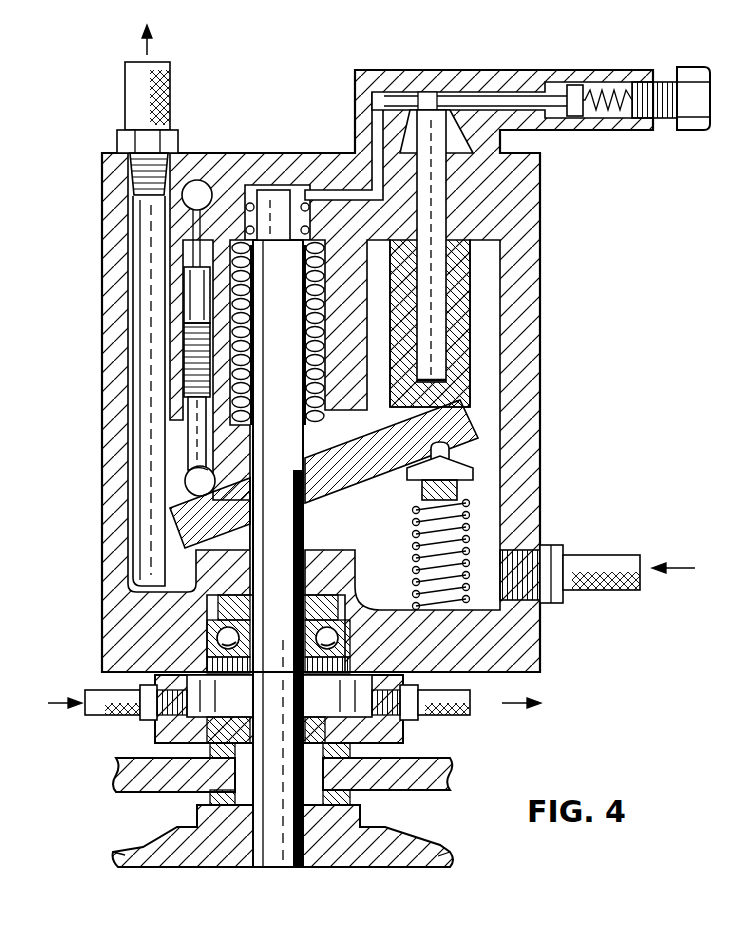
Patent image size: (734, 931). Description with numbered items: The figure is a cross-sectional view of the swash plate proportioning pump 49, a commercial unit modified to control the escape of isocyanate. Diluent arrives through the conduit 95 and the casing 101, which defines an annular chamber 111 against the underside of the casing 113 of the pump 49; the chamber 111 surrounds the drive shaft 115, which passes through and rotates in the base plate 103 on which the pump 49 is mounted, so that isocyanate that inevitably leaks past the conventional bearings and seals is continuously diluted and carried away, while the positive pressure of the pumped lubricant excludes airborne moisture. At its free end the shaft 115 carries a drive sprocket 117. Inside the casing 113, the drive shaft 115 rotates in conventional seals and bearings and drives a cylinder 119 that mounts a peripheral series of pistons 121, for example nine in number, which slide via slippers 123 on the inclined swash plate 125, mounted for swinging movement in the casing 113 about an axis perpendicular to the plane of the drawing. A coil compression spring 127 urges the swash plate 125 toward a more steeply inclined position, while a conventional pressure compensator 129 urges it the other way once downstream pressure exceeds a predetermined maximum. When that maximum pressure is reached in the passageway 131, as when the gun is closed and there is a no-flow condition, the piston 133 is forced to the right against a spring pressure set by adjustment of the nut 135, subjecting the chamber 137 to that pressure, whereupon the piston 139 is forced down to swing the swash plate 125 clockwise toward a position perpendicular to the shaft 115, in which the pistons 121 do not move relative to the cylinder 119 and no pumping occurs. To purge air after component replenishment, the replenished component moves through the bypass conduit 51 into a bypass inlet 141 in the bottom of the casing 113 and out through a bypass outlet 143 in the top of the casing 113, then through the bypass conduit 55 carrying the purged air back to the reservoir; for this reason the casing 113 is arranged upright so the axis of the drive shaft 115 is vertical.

The pump 49 is at (550, 335).
The bypass conduit 51 is at (597, 590).
The bypass conduit 55 is at (130, 108).
The conduit 95 is at (98, 690).
The casing 101 is at (167, 733).
The base plate 103 is at (435, 775).
The annular chamber 111 is at (352, 704).
The casing 113 is at (513, 653).
The drive shaft 115 is at (303, 527).
The drive sprocket 117 is at (182, 836).
The cylinder 119 is at (358, 324).
The pistons 121 is at (190, 436).
The slippers 123 is at (185, 482).
The swash plate 125 is at (380, 470).
The coil compression spring 127 is at (412, 548).
The pressure compensator 129 is at (547, 140).
The passageway 131 is at (376, 130).
The piston 133 is at (527, 95).
The nut 135 is at (682, 127).
The chamber 137 is at (437, 207).
The piston 139 is at (502, 290).
The bypass inlet 141 is at (527, 555).
The bypass outlet 143 is at (140, 222).